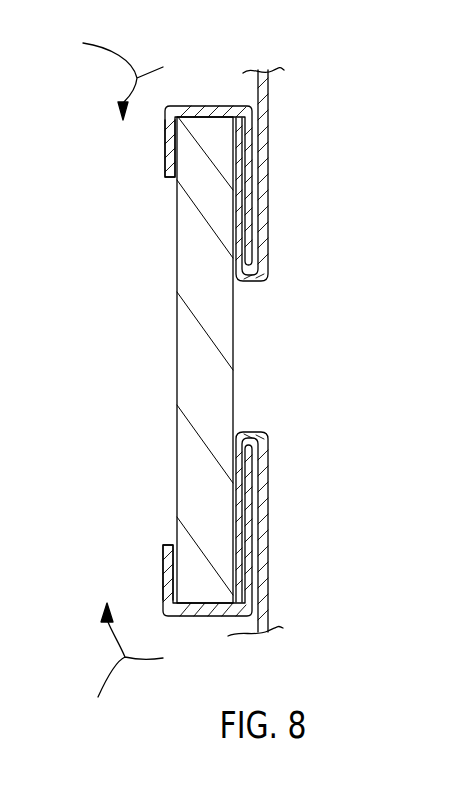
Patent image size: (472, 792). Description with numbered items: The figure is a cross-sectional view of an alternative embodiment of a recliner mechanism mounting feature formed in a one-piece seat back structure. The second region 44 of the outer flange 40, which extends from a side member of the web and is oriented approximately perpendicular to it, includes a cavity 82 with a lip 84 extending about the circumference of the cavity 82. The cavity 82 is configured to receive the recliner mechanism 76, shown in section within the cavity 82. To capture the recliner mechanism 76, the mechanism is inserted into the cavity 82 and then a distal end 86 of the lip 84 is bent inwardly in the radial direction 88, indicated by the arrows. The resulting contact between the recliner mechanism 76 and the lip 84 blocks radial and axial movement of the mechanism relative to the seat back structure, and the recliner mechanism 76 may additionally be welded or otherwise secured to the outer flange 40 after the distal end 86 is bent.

The outer flange 40 is at (308, 112).
The second region 44 is at (264, 207).
The recliner mechanism 76 is at (177, 332).
The cavity 82 is at (261, 357).
The lip 84 is at (201, 105).
The distal end 86 is at (165, 138).
The radial direction 88 is at (106, 379).